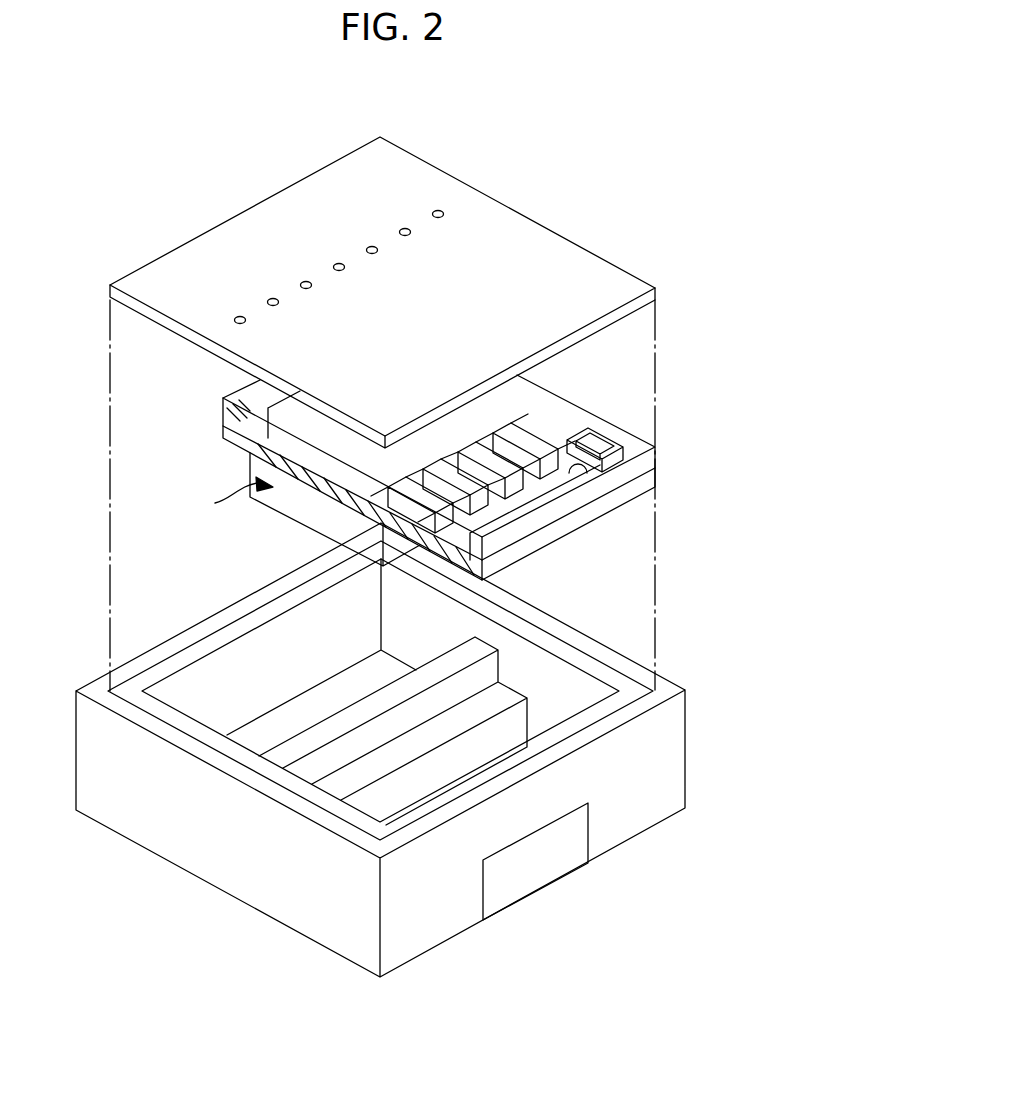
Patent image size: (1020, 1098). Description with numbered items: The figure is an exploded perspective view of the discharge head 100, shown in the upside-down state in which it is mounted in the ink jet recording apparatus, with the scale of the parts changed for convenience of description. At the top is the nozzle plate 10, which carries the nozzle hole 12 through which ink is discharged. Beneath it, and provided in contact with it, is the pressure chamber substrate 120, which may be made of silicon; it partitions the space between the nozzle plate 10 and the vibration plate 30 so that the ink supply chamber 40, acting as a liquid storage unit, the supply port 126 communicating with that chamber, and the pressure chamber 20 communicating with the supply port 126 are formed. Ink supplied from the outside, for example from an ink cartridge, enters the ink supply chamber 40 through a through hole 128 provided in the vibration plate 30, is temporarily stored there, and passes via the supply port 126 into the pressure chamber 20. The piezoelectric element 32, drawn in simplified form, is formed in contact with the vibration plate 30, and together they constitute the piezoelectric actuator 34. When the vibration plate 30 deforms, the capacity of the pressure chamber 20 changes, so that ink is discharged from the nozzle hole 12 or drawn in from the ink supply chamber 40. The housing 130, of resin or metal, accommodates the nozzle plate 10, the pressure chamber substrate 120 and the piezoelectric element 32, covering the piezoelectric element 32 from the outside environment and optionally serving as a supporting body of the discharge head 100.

The discharge head 100 is at (613, 128).
The nozzle plate 10 is at (541, 258).
The nozzle hole 12 is at (442, 208).
The pressure chamber 20 is at (293, 446).
The pressure chamber substrate 120 is at (226, 407).
The supply port 126 is at (523, 403).
The through hole 128 is at (583, 469).
The vibration plate 30 is at (310, 482).
The piezoelectric element 32 is at (293, 450).
The piezoelectric actuator 34 is at (215, 503).
The ink supply chamber 40 is at (600, 445).
The housing 130 is at (668, 691).